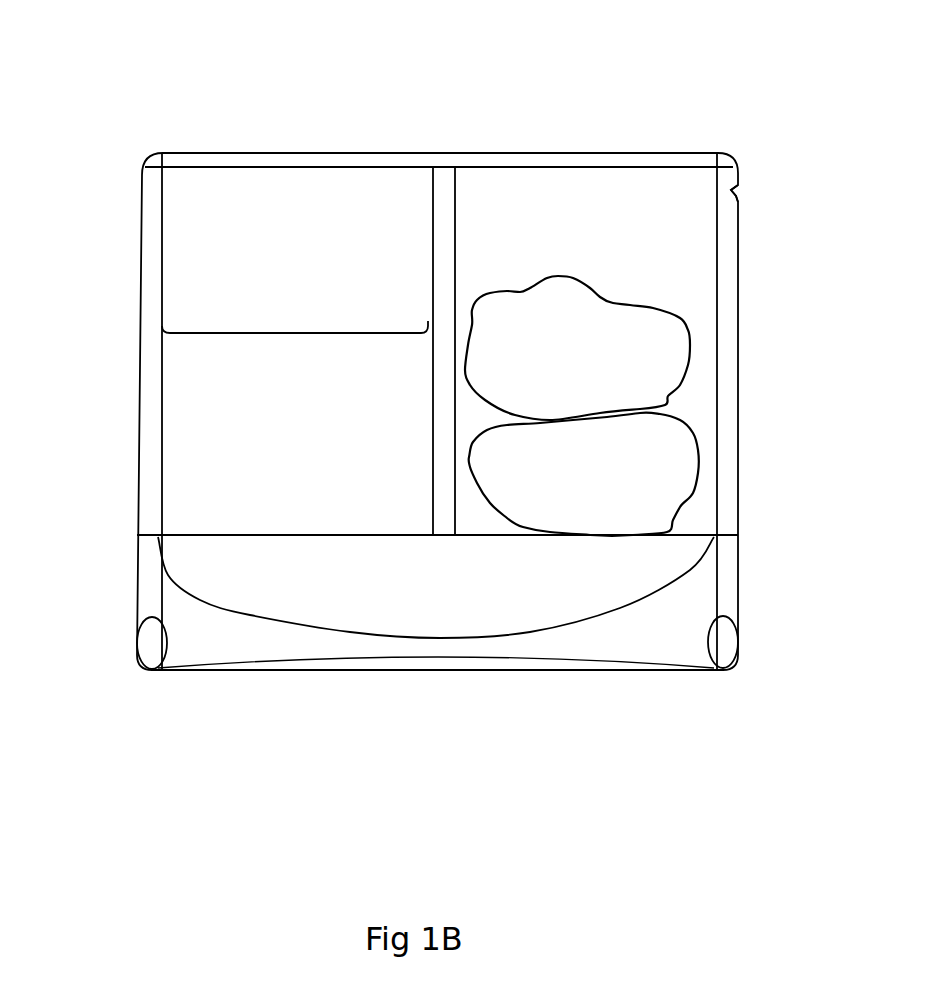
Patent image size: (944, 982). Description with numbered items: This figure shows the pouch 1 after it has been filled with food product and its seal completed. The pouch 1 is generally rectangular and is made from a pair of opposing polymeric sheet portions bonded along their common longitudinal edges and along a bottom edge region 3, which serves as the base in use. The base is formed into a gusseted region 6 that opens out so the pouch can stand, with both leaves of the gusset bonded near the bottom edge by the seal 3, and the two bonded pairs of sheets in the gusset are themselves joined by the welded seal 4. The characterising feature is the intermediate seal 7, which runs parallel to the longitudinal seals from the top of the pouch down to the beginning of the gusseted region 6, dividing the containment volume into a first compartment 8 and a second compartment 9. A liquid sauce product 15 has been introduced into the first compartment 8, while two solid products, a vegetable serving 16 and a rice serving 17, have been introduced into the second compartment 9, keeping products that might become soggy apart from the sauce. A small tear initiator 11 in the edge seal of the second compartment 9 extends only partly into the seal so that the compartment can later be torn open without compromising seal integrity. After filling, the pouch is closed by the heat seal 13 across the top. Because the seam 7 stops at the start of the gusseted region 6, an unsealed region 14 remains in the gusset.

The pouch 1 is at (128, 106).
The bottom edge region seal 3 is at (675, 637).
The welded seal 4 is at (150, 650).
The gusseted region 6 is at (88, 535).
The intermediate seal 7 is at (440, 197).
The first compartment 8 is at (218, 230).
The second compartment 9 is at (673, 258).
The tear initiator 11 is at (750, 190).
The heat seal 13 is at (162, 163).
The unsealed region 14 is at (445, 585).
The liquid sauce product 15 is at (200, 428).
The vegetable serving 16 is at (638, 479).
The rice serving 17 is at (660, 345).